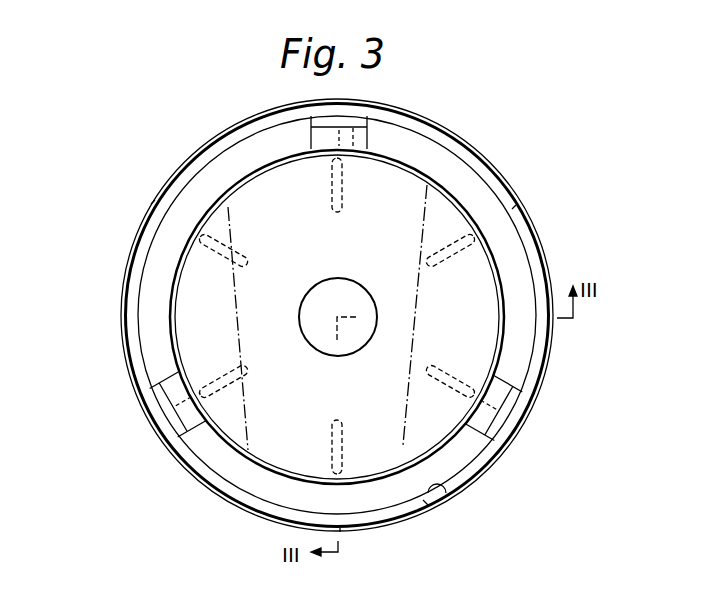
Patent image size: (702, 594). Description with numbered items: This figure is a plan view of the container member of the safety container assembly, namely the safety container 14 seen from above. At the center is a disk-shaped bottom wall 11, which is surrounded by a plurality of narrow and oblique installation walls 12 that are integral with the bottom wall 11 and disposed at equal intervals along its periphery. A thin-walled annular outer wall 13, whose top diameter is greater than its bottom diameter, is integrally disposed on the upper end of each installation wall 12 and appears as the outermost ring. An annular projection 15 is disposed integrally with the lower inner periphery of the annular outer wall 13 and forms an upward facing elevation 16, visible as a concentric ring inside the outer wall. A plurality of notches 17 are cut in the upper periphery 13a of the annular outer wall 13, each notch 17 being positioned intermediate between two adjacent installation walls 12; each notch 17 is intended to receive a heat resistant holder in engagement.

The bottom wall 11 is at (446, 213).
The installation walls 12 is at (351, 152).
The annular outer wall 13 is at (473, 151).
The upper periphery 13a is at (128, 353).
The safety container 14 is at (549, 266).
The annular projection 15 is at (442, 492).
The upward facing elevation 16 is at (425, 503).
The notches 17 is at (153, 203).